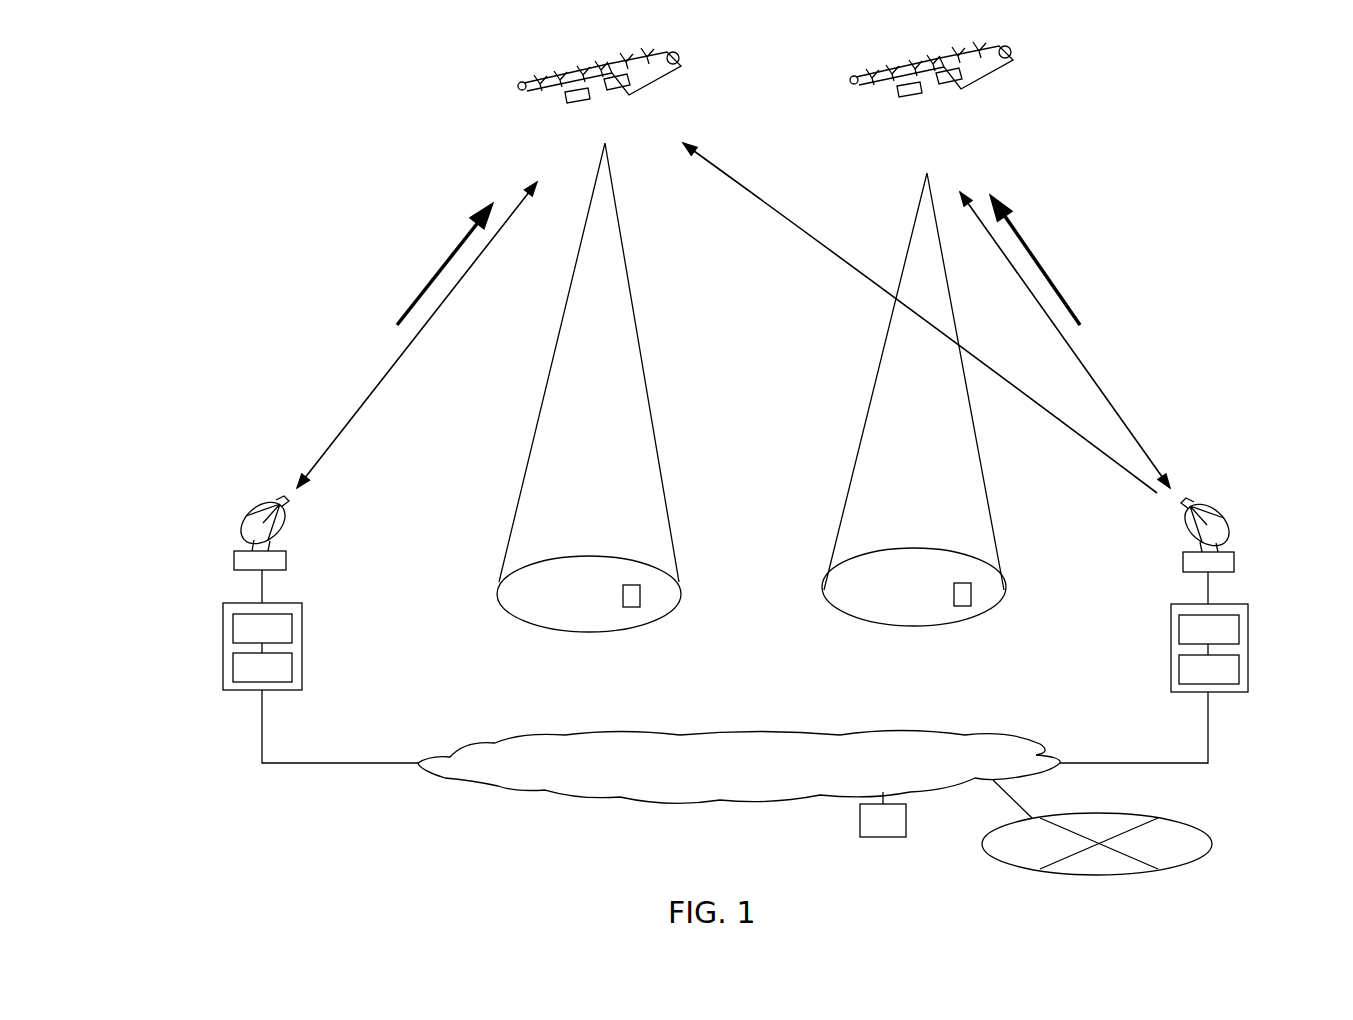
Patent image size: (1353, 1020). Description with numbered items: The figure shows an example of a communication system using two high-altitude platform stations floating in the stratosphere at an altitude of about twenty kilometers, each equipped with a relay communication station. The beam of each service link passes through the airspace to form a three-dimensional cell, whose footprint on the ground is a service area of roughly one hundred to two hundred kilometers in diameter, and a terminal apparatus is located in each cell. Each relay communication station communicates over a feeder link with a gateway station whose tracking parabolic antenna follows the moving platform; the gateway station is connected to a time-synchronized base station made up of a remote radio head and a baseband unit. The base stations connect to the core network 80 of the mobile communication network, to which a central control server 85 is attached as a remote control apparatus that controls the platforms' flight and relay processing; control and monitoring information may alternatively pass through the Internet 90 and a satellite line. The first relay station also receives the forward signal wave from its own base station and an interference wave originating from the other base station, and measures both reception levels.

The core network 80 is at (532, 797).
The central control server 85 is at (860, 822).
The Internet 90 is at (1203, 833).